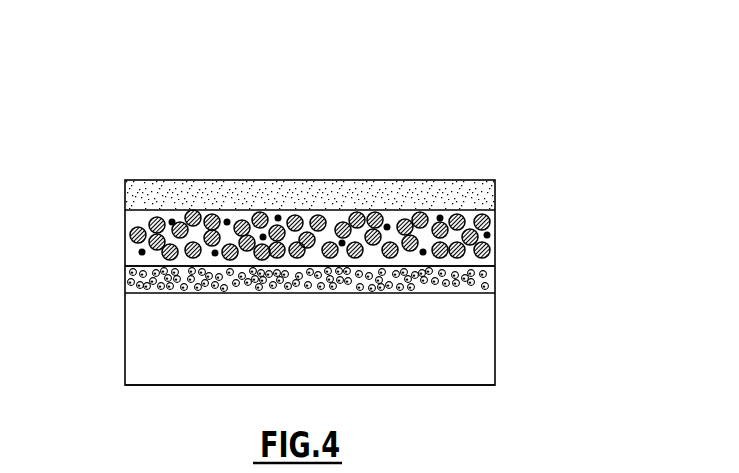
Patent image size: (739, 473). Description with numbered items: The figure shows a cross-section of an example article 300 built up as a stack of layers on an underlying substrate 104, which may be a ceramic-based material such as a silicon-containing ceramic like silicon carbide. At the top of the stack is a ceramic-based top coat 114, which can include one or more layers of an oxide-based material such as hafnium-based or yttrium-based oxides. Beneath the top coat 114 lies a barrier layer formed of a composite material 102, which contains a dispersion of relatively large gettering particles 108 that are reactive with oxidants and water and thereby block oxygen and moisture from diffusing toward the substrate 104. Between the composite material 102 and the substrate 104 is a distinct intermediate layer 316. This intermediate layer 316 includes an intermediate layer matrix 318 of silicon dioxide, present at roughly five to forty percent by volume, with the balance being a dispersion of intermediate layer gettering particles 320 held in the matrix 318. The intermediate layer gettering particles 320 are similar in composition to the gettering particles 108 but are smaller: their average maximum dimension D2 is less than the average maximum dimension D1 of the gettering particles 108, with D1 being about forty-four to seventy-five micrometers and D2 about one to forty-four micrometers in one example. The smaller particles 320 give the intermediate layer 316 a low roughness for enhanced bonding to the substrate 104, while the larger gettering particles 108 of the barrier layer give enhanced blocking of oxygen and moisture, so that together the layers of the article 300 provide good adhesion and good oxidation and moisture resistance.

The article 300 is at (534, 394).
The ceramic-based top coat 114 is at (492, 192).
The composite material 102 is at (510, 237).
The gettering particles 108 is at (320, 216).
The average maximum dimension of the gettering particles D1 is at (420, 243).
The intermediate layer 316 is at (496, 280).
The intermediate layer gettering particles 320 is at (159, 284).
The intermediate layer matrix 318 is at (317, 284).
The average maximum dimension of the intermediate layer gettering particles D2 is at (410, 258).
The substrate 104 is at (496, 332).